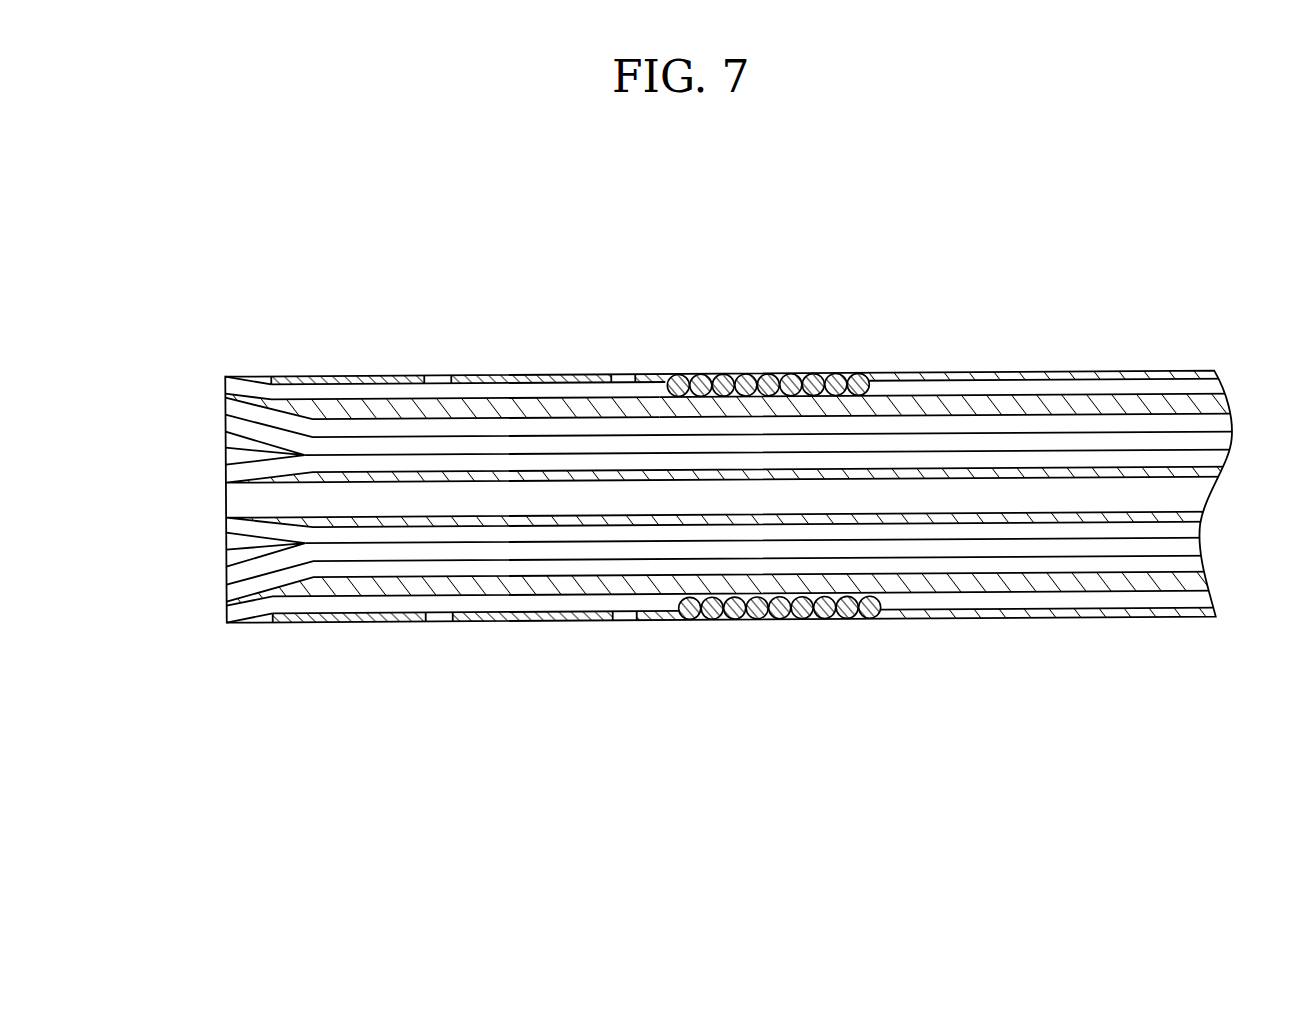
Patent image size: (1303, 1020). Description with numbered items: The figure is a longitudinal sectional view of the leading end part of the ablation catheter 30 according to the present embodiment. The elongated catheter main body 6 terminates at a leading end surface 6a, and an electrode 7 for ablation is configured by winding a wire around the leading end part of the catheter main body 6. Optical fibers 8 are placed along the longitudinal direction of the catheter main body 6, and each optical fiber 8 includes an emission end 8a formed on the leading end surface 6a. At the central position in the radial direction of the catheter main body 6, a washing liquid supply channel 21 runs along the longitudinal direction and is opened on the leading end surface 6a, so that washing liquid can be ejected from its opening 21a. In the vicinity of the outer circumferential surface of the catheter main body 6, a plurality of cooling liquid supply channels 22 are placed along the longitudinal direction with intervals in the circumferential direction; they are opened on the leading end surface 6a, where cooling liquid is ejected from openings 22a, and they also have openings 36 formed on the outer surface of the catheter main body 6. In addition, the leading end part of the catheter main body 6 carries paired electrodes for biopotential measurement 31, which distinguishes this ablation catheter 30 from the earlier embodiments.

The ablation catheter 30 is at (747, 258).
The cooling liquid supply channels 22 is at (1086, 379).
The openings 22a is at (257, 382).
The electrodes for biopotential measurement 31 is at (345, 374).
The openings 36 is at (440, 374).
The optical fibers 8 is at (493, 412).
The emission end 8a is at (226, 438).
The catheter main body 6 is at (952, 373).
The leading end surface 6a is at (226, 601).
The electrode 7 is at (796, 374).
The washing liquid supply channel 21 is at (1167, 507).
The opening 21a is at (270, 485).